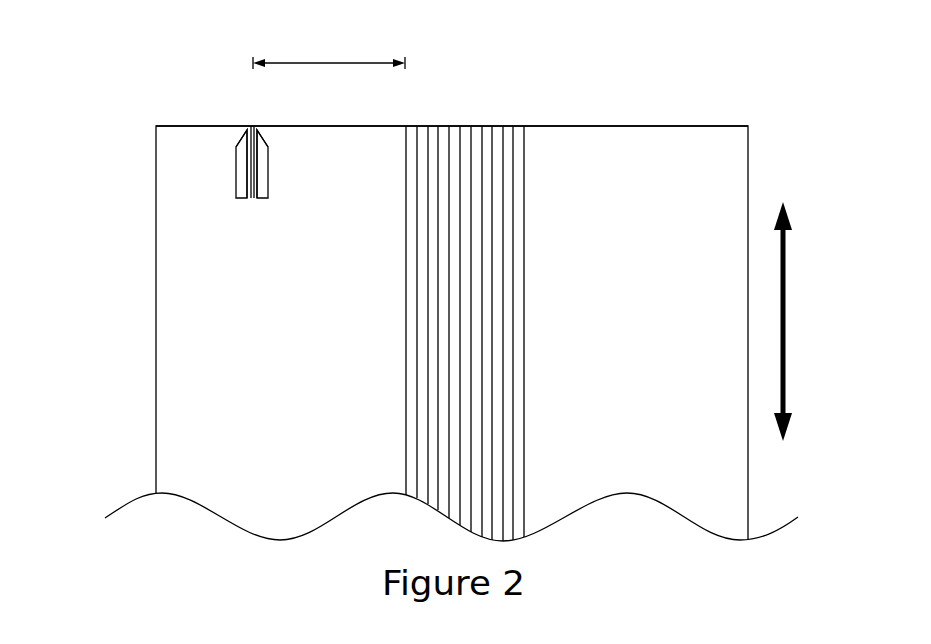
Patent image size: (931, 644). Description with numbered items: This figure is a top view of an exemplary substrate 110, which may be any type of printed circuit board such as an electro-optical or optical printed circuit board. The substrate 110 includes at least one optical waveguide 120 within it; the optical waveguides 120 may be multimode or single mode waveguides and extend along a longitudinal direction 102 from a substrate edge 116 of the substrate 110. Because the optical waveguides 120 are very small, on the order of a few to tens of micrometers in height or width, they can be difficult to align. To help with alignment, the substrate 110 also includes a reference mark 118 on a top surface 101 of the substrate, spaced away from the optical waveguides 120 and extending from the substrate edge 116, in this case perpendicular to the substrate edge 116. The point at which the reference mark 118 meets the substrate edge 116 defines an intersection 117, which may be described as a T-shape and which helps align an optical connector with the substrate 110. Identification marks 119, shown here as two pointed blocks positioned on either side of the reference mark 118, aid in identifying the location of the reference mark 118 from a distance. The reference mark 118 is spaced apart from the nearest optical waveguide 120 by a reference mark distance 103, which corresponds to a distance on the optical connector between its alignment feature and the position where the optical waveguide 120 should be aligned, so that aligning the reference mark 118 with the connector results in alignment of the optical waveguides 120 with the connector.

The top surface 101 is at (689, 193).
The longitudinal direction 102 is at (785, 333).
The reference mark distance 103 is at (307, 62).
The substrate 110 is at (707, 57).
The substrate edge 116 is at (593, 125).
The intersection 117 is at (252, 126).
The reference mark 118 is at (255, 133).
The identification marks 119 is at (260, 200).
The optical waveguides 120 is at (428, 340).